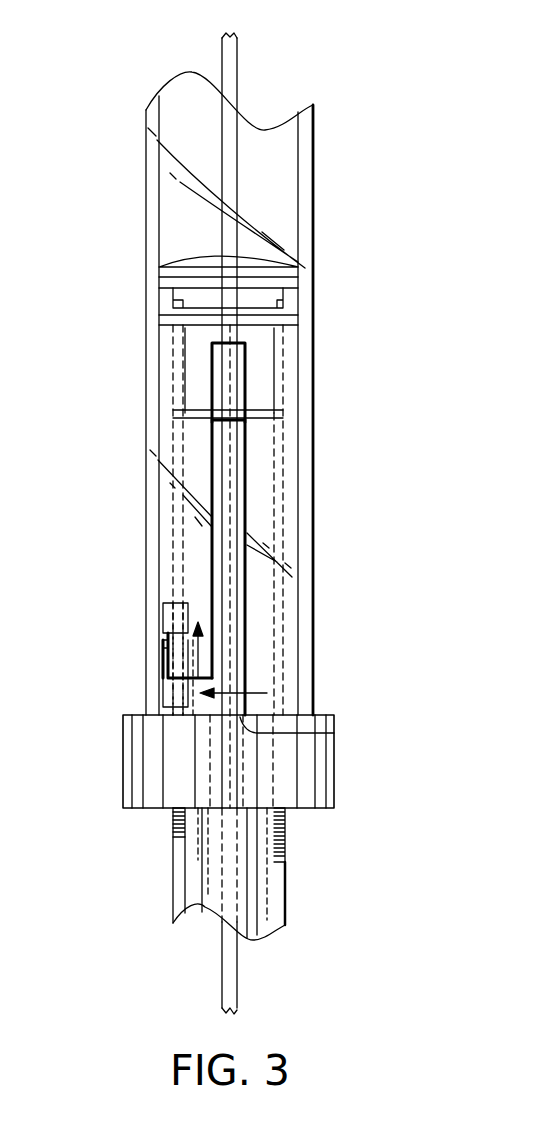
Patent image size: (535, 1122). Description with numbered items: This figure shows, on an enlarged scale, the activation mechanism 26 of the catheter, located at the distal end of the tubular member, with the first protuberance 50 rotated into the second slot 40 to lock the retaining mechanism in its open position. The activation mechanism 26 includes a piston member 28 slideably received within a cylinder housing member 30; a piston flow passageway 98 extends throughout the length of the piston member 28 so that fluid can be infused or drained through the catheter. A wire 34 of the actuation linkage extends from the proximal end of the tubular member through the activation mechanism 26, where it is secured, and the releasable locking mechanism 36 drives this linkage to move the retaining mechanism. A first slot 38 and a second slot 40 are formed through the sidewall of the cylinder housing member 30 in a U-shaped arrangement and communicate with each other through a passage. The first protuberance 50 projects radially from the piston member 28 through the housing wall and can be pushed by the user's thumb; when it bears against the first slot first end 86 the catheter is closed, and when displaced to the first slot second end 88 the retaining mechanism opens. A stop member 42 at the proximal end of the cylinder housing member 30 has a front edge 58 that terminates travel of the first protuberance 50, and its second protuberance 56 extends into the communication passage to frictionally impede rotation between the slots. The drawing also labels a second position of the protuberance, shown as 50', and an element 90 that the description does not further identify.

The activation mechanism 26 is at (315, 260).
The piston member 28 is at (303, 395).
The cylinder housing member 30 is at (313, 512).
The wire 34 is at (237, 60).
The releasable locking mechanism 36 is at (122, 712).
The first slot 38 is at (247, 573).
The second slot 40 is at (165, 650).
The stop member 42 is at (334, 788).
The first protuberance 50 is at (279, 643).
The pin 50' is at (137, 616).
The second protuberance 56 is at (205, 707).
The front edge 58 is at (326, 713).
The first slot first end 86 is at (230, 347).
The first slot second end 88 is at (334, 733).
The latch 90 is at (180, 603).
The piston flow passageway 98 is at (310, 317).